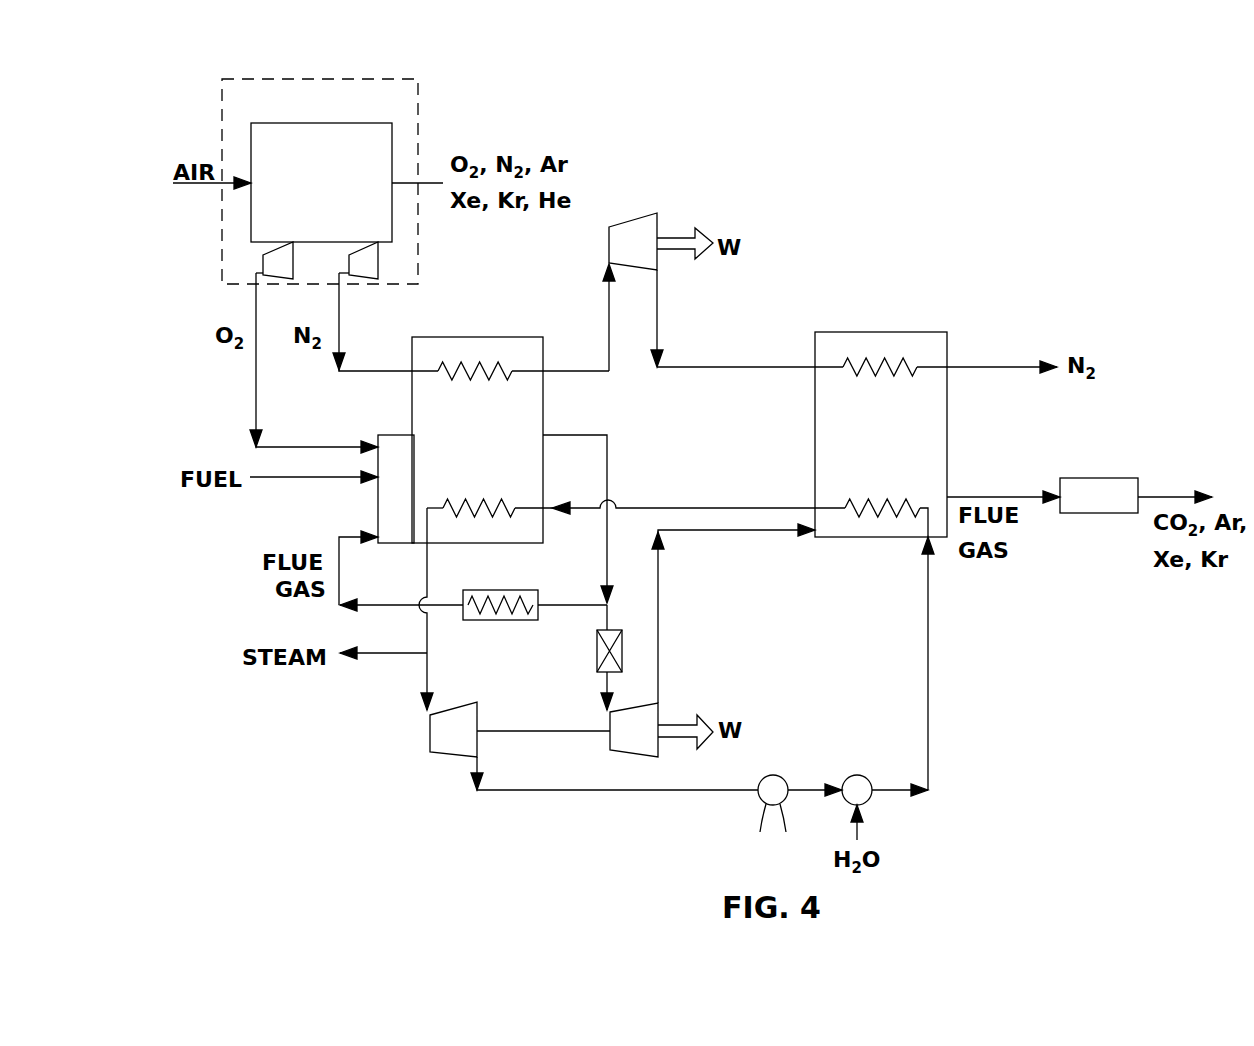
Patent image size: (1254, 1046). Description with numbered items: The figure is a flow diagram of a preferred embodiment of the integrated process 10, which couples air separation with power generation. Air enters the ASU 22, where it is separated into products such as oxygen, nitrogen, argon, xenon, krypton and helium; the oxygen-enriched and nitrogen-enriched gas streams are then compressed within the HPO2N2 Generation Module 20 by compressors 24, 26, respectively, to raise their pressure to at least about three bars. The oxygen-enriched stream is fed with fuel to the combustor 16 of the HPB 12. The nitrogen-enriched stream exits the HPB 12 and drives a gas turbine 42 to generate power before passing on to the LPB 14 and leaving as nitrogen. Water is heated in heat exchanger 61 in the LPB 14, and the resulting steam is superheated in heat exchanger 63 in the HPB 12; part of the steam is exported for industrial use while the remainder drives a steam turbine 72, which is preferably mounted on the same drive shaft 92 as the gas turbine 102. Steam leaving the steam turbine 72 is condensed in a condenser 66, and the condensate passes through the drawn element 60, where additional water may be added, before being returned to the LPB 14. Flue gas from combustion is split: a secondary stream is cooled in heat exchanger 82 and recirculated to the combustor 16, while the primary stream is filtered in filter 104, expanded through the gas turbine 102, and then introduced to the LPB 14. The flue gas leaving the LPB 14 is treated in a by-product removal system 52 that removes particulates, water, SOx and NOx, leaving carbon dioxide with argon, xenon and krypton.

The integrated process 10 is at (905, 178).
The HPB 12 is at (458, 338).
The LPB 14 is at (900, 332).
The combustor 16 is at (395, 435).
The HPO2N2 Generation Module 20 is at (445, 62).
The ASU 22 is at (392, 145).
The compressor 24 is at (263, 265).
The compressor 26 is at (378, 268).
The gas turbine 42 is at (642, 227).
The by-product removal system 52 is at (1090, 478).
The mixer 60 is at (862, 776).
The heat exchanger 61 is at (850, 500).
The heat exchanger 63 is at (445, 505).
The condenser 66 is at (780, 777).
The steam turbine 72 is at (462, 745).
The heat exchanger 82 is at (505, 620).
The drive shaft 92 is at (520, 731).
The gas turbine 102 is at (655, 712).
The filter 104 is at (597, 652).